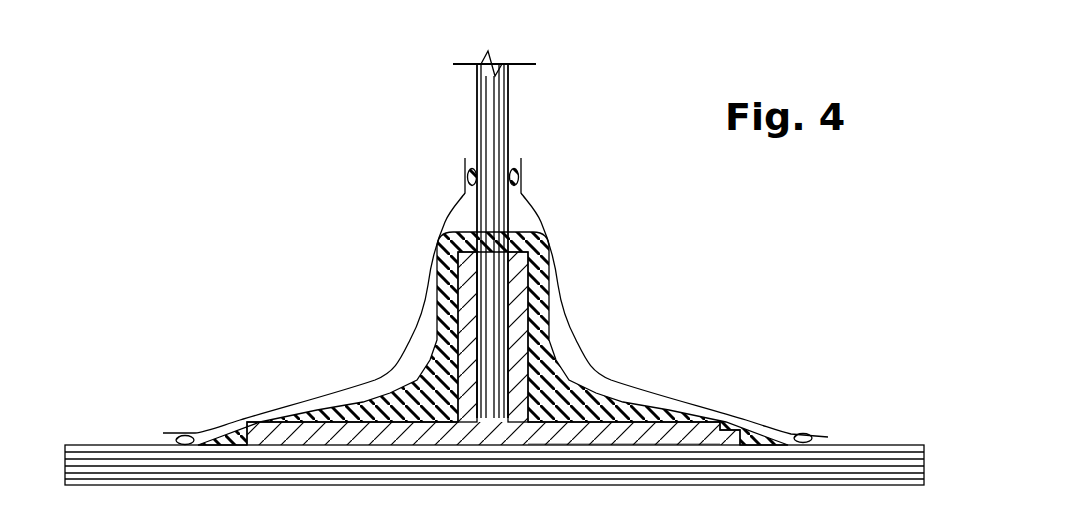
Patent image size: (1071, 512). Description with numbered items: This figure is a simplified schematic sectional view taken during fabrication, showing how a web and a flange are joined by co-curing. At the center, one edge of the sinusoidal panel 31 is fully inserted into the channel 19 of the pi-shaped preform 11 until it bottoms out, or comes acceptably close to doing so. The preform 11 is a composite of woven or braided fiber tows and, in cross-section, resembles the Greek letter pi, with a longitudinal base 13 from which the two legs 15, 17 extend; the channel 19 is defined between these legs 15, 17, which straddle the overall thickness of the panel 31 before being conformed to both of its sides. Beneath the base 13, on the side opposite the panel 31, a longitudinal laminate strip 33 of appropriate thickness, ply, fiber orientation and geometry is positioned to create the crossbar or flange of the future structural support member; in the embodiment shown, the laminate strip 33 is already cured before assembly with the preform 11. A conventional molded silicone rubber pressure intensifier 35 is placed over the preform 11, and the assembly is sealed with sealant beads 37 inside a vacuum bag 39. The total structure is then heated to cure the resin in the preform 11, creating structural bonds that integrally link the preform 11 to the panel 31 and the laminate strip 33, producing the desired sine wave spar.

The preform 11 is at (653, 430).
The base 13 is at (627, 433).
The leg 15 is at (467, 322).
The leg 17 is at (518, 268).
The channel 19 is at (478, 285).
The sinusoidal panel 31 is at (508, 106).
The laminate strip 33 is at (123, 445).
The pressure intensifier 35 is at (550, 312).
The sealant beads 37 is at (466, 172).
The vacuum bag 39 is at (437, 247).